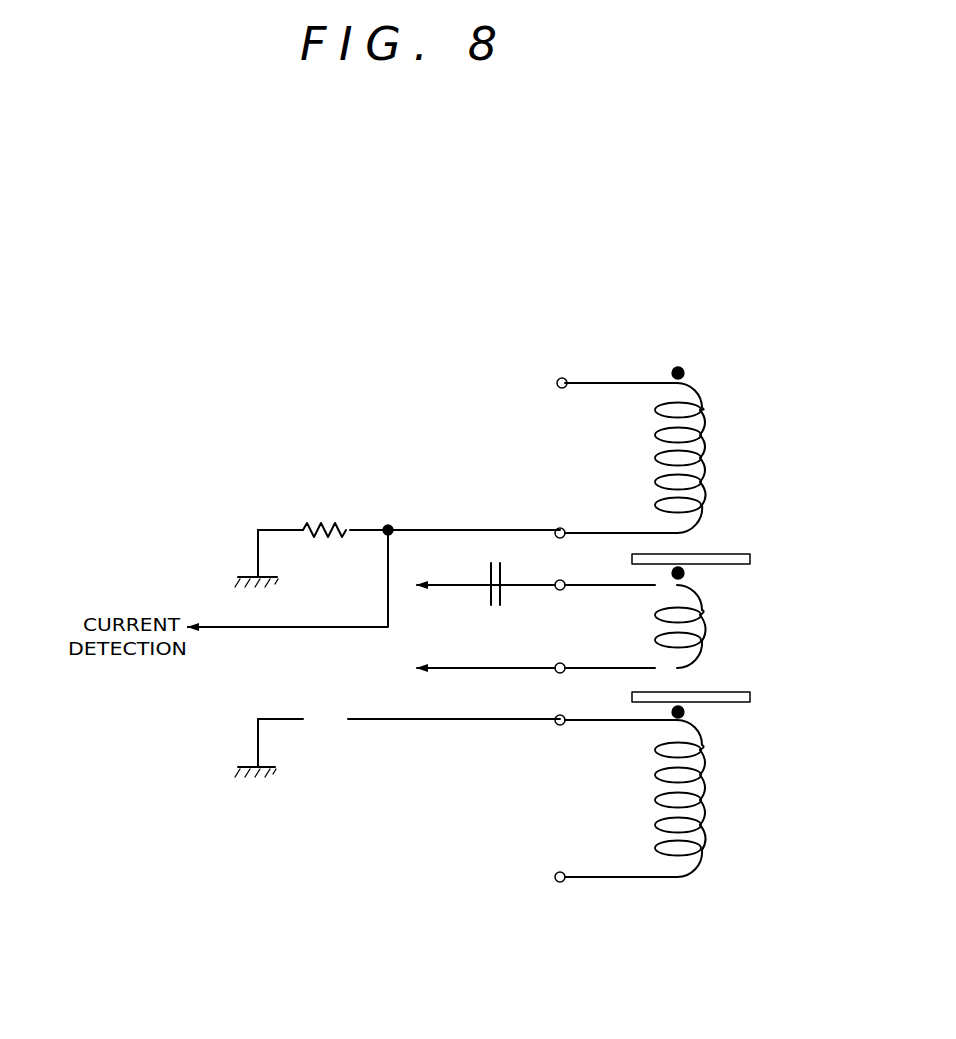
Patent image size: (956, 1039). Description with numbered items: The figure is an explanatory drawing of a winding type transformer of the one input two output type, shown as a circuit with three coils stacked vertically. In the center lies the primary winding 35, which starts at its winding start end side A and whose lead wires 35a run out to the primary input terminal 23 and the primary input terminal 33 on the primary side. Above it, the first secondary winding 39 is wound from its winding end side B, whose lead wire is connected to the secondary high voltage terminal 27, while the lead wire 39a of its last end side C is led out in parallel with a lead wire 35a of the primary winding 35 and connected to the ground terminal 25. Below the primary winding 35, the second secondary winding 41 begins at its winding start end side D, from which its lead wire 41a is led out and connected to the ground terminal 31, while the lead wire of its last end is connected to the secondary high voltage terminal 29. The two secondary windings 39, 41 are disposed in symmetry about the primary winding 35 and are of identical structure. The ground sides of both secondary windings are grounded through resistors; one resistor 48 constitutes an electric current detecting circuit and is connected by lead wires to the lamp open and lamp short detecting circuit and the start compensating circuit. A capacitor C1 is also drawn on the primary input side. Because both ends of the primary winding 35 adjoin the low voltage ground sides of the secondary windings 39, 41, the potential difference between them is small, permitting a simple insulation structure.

The secondary high voltage terminal 27 is at (561, 377).
The winding end side of the first secondary winding B is at (679, 367).
The first secondary winding 39 is at (703, 447).
The lead wire of the first secondary winding 39a is at (592, 532).
The last end side of the first secondary winding C is at (641, 518).
The ground terminal 25 is at (554, 527).
The resistor 48 is at (327, 523).
The winding start end side of the primary winding A is at (684, 573).
The primary winding 35 is at (703, 632).
The lead wire of the primary winding 35a is at (608, 695).
The primary input terminal 23 is at (556, 590).
The capacitor C1 is at (499, 598).
The primary input terminal 33 is at (556, 672).
The winding start end side of the second secondary winding D is at (684, 712).
The ground terminal 31 is at (557, 725).
The lead wire of the second secondary winding 41a is at (598, 723).
The second secondary winding 41 is at (703, 840).
The secondary high voltage terminal 29 is at (560, 882).